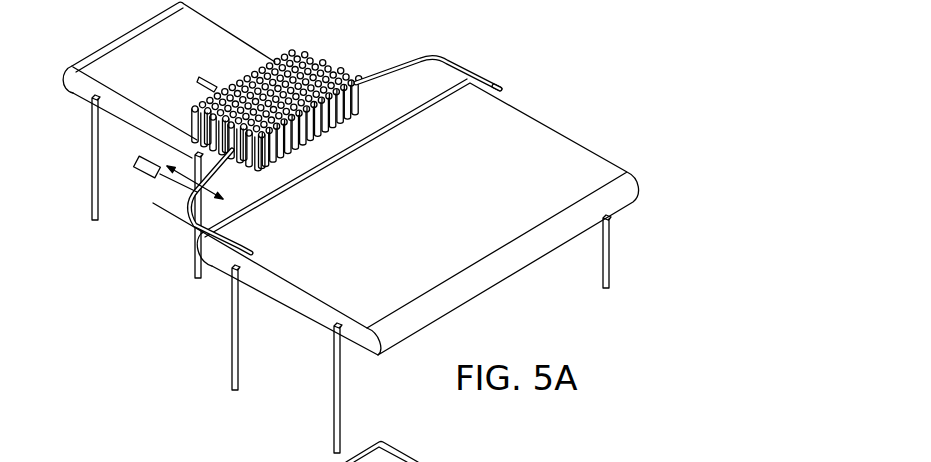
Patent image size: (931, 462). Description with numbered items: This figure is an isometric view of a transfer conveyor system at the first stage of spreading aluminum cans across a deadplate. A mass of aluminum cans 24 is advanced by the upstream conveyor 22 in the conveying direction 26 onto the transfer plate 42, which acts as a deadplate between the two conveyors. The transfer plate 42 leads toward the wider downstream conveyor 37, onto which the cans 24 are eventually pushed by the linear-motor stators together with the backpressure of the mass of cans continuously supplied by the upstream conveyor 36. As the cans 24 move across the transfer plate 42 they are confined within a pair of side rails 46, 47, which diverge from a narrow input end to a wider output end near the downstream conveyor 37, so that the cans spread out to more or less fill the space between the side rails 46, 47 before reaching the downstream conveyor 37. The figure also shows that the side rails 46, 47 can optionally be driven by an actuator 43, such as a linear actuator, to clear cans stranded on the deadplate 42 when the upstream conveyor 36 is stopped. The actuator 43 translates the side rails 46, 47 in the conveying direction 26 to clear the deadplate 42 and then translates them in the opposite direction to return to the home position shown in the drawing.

The upstream conveyor 22 is at (82, 90).
The upstream conveyor 36 is at (198, 14).
The conveying direction 26 is at (217, 73).
The aluminum cans 24 is at (298, 62).
The transfer plate 42 is at (416, 54).
The side rail 46 is at (460, 66).
The downstream conveyor 37 is at (578, 144).
The actuator 43 is at (145, 172).
The side rail 47 is at (203, 226).